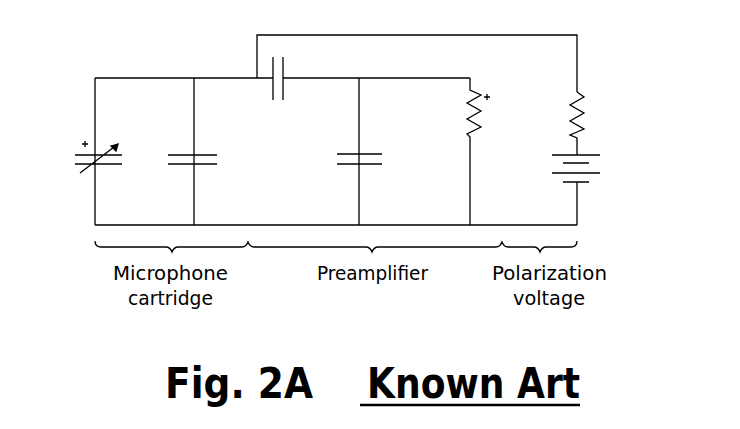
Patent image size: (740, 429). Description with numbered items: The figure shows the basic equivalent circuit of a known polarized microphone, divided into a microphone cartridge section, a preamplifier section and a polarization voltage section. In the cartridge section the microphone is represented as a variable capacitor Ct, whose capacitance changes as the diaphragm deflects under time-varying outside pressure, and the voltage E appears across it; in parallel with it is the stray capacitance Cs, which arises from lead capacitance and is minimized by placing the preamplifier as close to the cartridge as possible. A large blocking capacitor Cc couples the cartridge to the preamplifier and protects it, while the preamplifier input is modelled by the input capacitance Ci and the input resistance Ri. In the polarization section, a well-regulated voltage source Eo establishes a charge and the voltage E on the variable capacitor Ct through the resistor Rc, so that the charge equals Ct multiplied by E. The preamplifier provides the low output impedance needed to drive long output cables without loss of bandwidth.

The voltage E is at (87, 158).
The variable capacitor Ct is at (176, 165).
The stray capacitance Cs is at (206, 165).
The blocking capacitor Cc is at (280, 94).
The input capacitance Ci is at (347, 165).
The input resistance Ri is at (466, 151).
The resistor Rc is at (595, 123).
The voltage source Eo is at (590, 188).